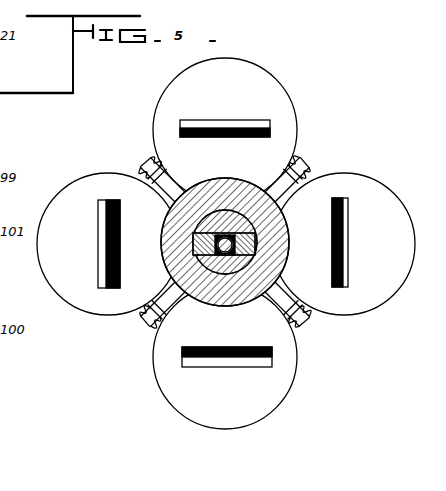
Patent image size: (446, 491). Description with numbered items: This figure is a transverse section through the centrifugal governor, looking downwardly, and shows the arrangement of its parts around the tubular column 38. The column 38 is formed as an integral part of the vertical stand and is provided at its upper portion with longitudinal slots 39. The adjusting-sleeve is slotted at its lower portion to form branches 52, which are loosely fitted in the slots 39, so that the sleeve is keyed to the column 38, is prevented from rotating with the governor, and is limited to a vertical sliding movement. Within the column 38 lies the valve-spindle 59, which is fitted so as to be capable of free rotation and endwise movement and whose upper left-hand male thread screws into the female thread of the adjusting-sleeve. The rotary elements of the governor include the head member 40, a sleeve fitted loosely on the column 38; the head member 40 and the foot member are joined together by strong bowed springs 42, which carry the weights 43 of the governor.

The weights 43 is at (241, 72).
The bowed springs 42 is at (256, 122).
The branches 52 is at (250, 241).
The tubular column 38 is at (143, 170).
The longitudinal slots 39 is at (150, 316).
The valve-spindle 59 is at (298, 174).
The head member 40 is at (303, 313).